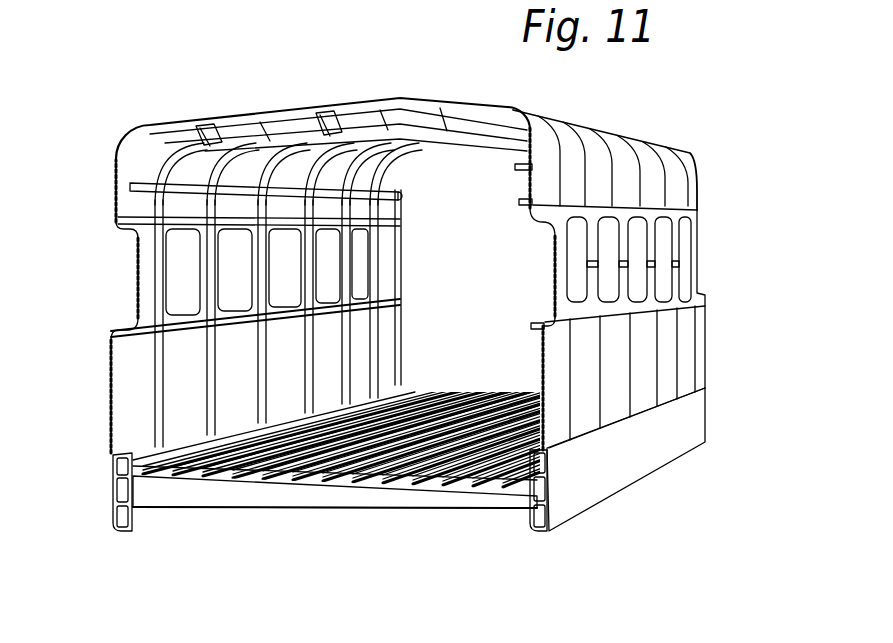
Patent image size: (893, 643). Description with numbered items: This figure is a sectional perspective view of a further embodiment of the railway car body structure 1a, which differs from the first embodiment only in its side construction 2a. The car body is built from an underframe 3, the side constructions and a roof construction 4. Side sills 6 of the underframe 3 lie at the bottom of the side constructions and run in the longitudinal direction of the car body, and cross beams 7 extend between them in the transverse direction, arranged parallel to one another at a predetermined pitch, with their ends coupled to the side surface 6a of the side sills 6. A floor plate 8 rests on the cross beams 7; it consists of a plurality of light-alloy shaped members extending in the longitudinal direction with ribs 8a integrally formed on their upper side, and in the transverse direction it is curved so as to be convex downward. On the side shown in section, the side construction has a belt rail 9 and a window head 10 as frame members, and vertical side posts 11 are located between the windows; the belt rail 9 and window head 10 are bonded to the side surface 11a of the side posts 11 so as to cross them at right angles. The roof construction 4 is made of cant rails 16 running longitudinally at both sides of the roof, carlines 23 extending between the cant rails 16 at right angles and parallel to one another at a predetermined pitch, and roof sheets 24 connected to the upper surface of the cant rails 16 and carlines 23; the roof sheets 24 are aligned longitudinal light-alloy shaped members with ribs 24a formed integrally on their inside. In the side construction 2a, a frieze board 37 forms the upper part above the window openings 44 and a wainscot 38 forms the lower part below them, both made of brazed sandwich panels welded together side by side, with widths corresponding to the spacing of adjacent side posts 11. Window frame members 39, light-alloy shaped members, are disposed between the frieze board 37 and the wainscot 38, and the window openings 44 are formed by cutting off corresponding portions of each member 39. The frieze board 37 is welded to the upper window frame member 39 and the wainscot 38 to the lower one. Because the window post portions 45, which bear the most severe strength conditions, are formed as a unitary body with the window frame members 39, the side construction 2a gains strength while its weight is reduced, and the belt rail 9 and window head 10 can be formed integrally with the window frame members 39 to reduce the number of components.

The car body structure 1a is at (603, 127).
The side construction 2a is at (765, 138).
The underframe 3 is at (417, 573).
The roof construction 4 is at (137, 48).
The side sill 6 is at (116, 492).
The side surface of side sill 6a is at (150, 514).
The cross beam 7 is at (278, 492).
The floor plate 8 is at (387, 468).
The rib of floor plate 8a is at (339, 468).
The belt rail 9 is at (133, 346).
The window head 10 is at (130, 216).
The side post 11 is at (160, 258).
The side surface of side post 11a is at (150, 302).
The cant rail 16 is at (180, 138).
The carline 23 is at (267, 132).
The roof sheet 24 is at (336, 100).
The rib of roof sheet 24a is at (397, 110).
The frieze board 37 is at (676, 176).
The wainscot 38 is at (618, 362).
The window frame member 39 is at (690, 263).
The window opening 44 is at (550, 285).
The window post portion 45 is at (560, 243).